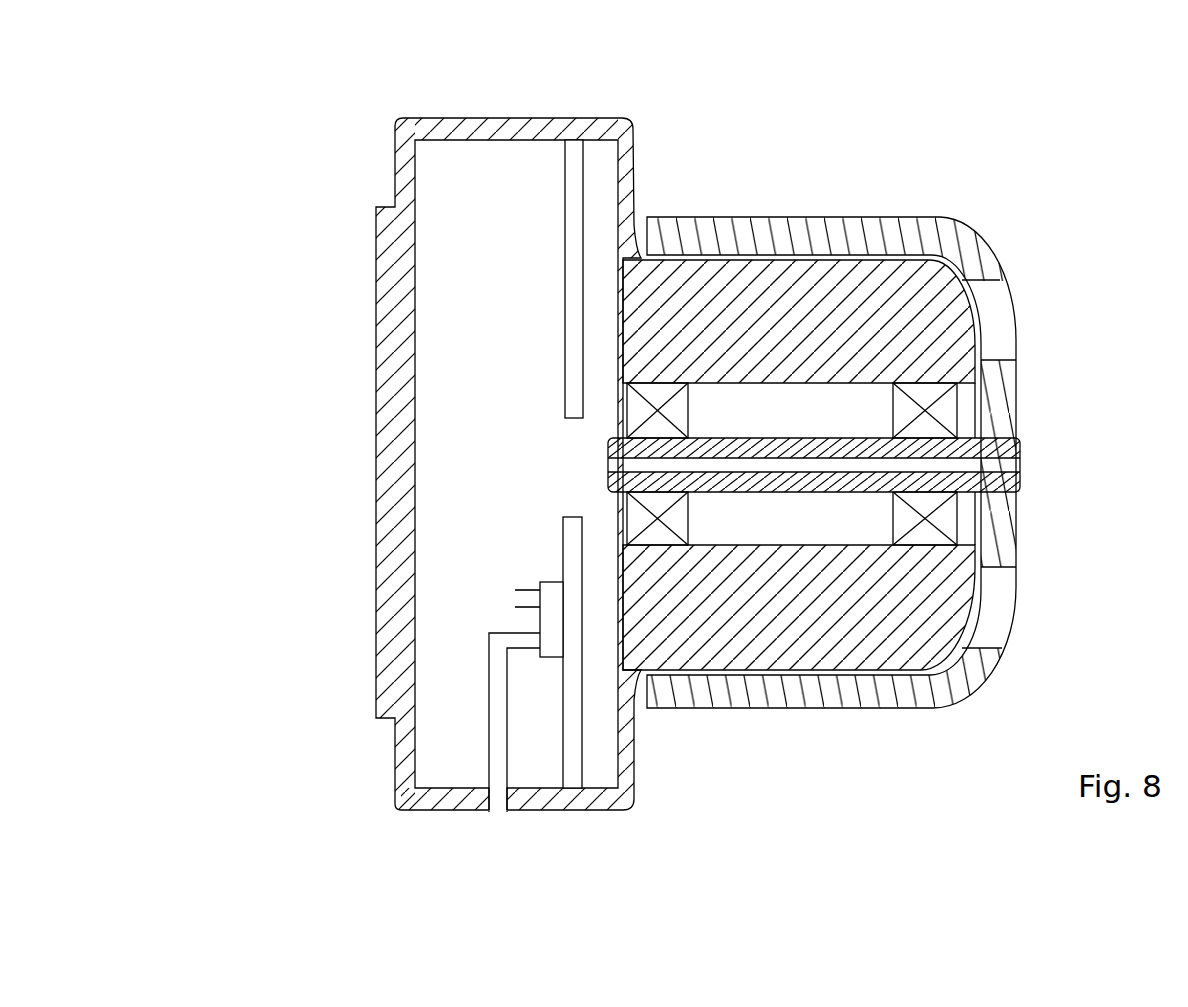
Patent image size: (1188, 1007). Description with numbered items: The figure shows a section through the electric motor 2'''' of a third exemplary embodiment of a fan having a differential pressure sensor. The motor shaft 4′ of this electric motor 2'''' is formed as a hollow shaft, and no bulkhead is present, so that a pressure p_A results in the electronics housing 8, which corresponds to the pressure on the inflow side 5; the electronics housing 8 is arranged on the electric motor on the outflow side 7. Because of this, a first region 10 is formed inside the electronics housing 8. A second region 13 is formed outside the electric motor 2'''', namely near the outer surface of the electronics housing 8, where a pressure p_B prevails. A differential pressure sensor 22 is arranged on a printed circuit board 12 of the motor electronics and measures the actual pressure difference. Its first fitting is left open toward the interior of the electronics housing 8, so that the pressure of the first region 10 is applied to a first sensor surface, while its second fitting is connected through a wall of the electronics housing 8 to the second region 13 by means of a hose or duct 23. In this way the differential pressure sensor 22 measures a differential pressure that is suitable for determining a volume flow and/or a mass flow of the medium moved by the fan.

The electric motor 2'''' is at (648, 449).
The electronics housing 8 is at (500, 125).
The printed circuit board 12 is at (573, 168).
The first region 10 is at (455, 342).
The differential pressure sensor 22 is at (551, 595).
The hose or duct 23 is at (495, 672).
The second region 13 is at (492, 836).
The inflow side 5 is at (1120, 418).
The motor shaft 4′ is at (990, 482).
The outflow side 7 is at (200, 416).